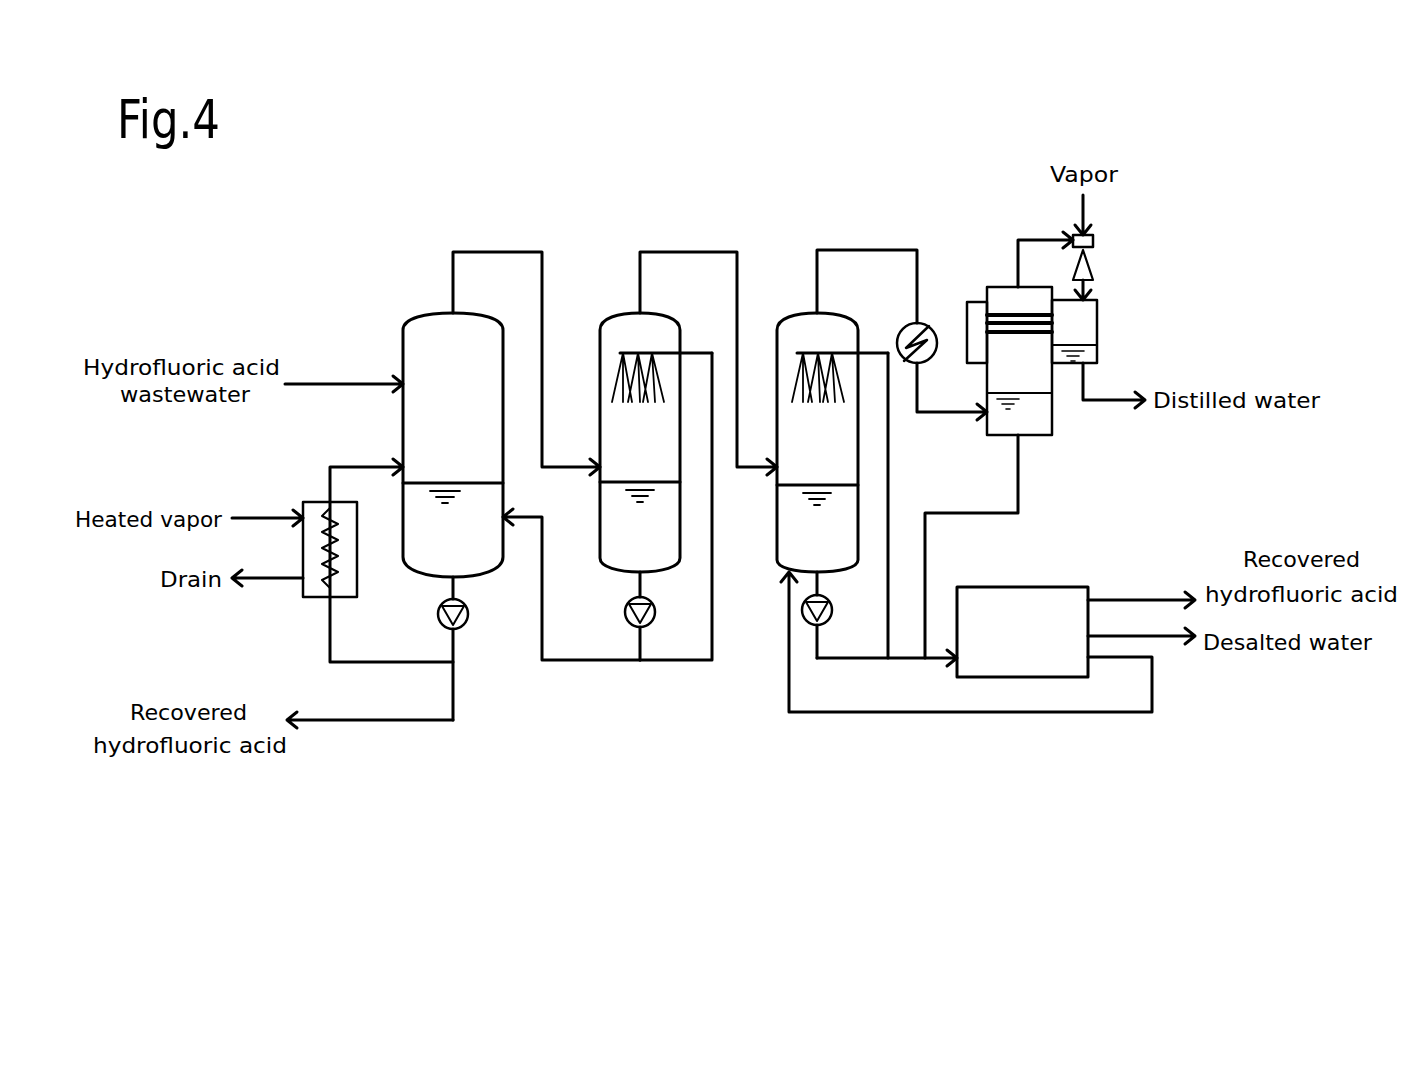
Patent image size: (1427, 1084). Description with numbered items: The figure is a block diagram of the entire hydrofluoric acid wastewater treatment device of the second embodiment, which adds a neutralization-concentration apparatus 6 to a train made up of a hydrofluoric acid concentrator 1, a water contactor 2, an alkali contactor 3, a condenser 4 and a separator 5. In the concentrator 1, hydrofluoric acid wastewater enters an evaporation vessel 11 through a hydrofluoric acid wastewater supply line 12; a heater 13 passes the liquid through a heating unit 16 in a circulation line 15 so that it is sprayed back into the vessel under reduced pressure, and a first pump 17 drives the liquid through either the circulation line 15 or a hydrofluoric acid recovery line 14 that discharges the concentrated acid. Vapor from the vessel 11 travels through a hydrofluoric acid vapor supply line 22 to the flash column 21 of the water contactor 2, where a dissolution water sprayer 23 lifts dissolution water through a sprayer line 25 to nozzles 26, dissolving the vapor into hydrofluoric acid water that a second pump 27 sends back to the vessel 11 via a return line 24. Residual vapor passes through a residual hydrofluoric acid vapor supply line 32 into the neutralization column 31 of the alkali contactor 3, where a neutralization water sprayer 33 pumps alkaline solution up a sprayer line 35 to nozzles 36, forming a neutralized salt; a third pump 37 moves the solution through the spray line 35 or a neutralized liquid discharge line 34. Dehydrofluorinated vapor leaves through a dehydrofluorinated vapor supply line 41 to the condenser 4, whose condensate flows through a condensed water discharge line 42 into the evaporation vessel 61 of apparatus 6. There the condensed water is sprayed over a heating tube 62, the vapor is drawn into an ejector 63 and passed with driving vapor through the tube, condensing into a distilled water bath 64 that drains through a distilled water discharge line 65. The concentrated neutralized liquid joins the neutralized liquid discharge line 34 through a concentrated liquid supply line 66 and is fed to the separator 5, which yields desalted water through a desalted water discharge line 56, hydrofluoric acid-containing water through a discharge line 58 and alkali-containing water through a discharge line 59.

The hydrofluoric acid concentrator 1 is at (490, 636).
The water contactor 2 is at (682, 672).
The alkali contactor 3 is at (767, 600).
The condenser 4 is at (899, 333).
The separator 5 is at (1000, 587).
The neutralization-concentration apparatus 6 is at (1132, 280).
The evaporation vessel 11 is at (403, 428).
The hydrofluoric acid wastewater supply line 12 is at (345, 383).
The heater 13 is at (282, 602).
The hydrofluoric acid recovery line 14 is at (365, 721).
The circulation line 15 is at (362, 662).
The heating unit 16 is at (305, 500).
The first pump 17 is at (470, 614).
The flash column 21 is at (600, 412).
The hydrofluoric acid vapor supply line 22 is at (542, 280).
The dissolution water sprayer 23 is at (722, 486).
The return line 24 is at (590, 662).
The sprayer line 25 is at (712, 565).
The nozzles 26 is at (652, 352).
The second pump 27 is at (625, 612).
The neutralization column 31 is at (797, 318).
The residual hydrofluoric acid vapor supply line 32 is at (640, 272).
The neutralization water sprayer 33 is at (904, 450).
The neutralized liquid discharge line 34 is at (905, 658).
The sprayer line 35 is at (890, 410).
The nozzles 36 is at (822, 350).
The third pump 37 is at (832, 610).
The dehydrofluorinated vapor supply line 41 is at (917, 250).
The condensed water discharge line 42 is at (920, 405).
The desalted water discharge line 56 is at (1155, 636).
The hydrofluoric acid-containing water discharge line 58 is at (1140, 600).
The alkali-containing water discharge line 59 is at (1000, 712).
The evaporation vessel 61 is at (1052, 418).
The heating tube 62 is at (1000, 315).
The ejector 63 is at (1093, 258).
The distilled water bath 64 is at (1097, 308).
The distilled water discharge line 65 is at (1105, 400).
The concentrated liquid supply line 66 is at (1020, 495).